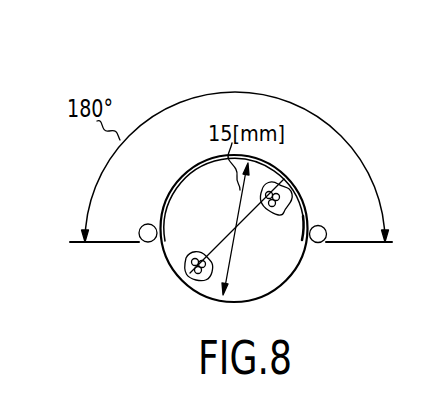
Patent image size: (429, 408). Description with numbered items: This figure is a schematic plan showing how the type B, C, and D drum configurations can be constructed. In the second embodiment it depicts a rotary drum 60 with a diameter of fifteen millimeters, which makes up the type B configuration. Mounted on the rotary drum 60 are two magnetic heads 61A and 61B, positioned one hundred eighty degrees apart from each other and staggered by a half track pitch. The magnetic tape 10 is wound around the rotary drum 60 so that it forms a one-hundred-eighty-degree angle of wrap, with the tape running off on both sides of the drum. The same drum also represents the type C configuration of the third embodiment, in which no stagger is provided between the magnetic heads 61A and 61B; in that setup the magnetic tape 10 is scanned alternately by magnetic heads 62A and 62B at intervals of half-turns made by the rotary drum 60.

The magnetic tape 10 is at (349, 243).
The rotary drum 60 is at (292, 269).
The magnetic head 61A is at (266, 225).
The magnetic head 61B is at (196, 236).
The magnetic head 62A is at (270, 207).
The magnetic head 62B is at (192, 264).